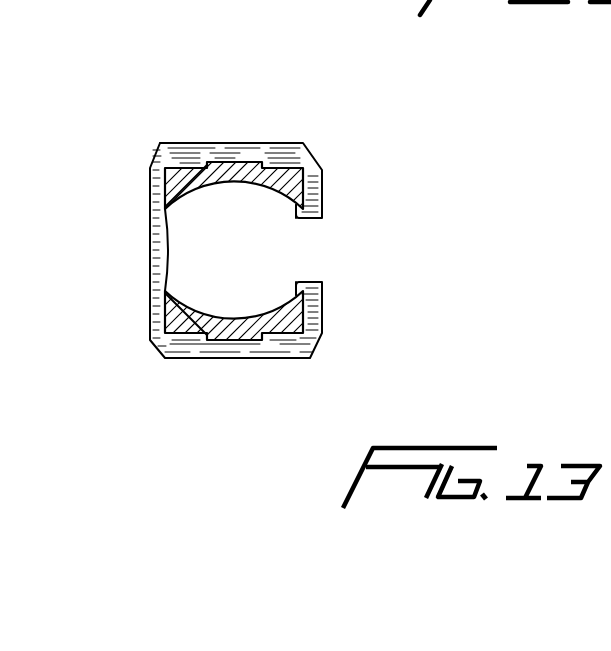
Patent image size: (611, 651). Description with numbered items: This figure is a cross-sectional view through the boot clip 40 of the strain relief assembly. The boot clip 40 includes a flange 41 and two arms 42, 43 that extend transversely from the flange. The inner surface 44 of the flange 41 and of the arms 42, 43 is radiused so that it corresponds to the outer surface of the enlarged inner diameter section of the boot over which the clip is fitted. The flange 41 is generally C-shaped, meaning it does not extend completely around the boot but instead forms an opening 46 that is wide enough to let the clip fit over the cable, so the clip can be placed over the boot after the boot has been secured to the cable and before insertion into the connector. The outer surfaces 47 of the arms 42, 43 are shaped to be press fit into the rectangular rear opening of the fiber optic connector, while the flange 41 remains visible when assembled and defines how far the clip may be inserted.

The boot clip 40 is at (357, 165).
The flange 41 is at (173, 148).
The arm 42 is at (288, 170).
The arm 43 is at (289, 334).
The inner surface 44 is at (168, 246).
The opening 46 is at (296, 258).
The outer surface 47 is at (230, 163).